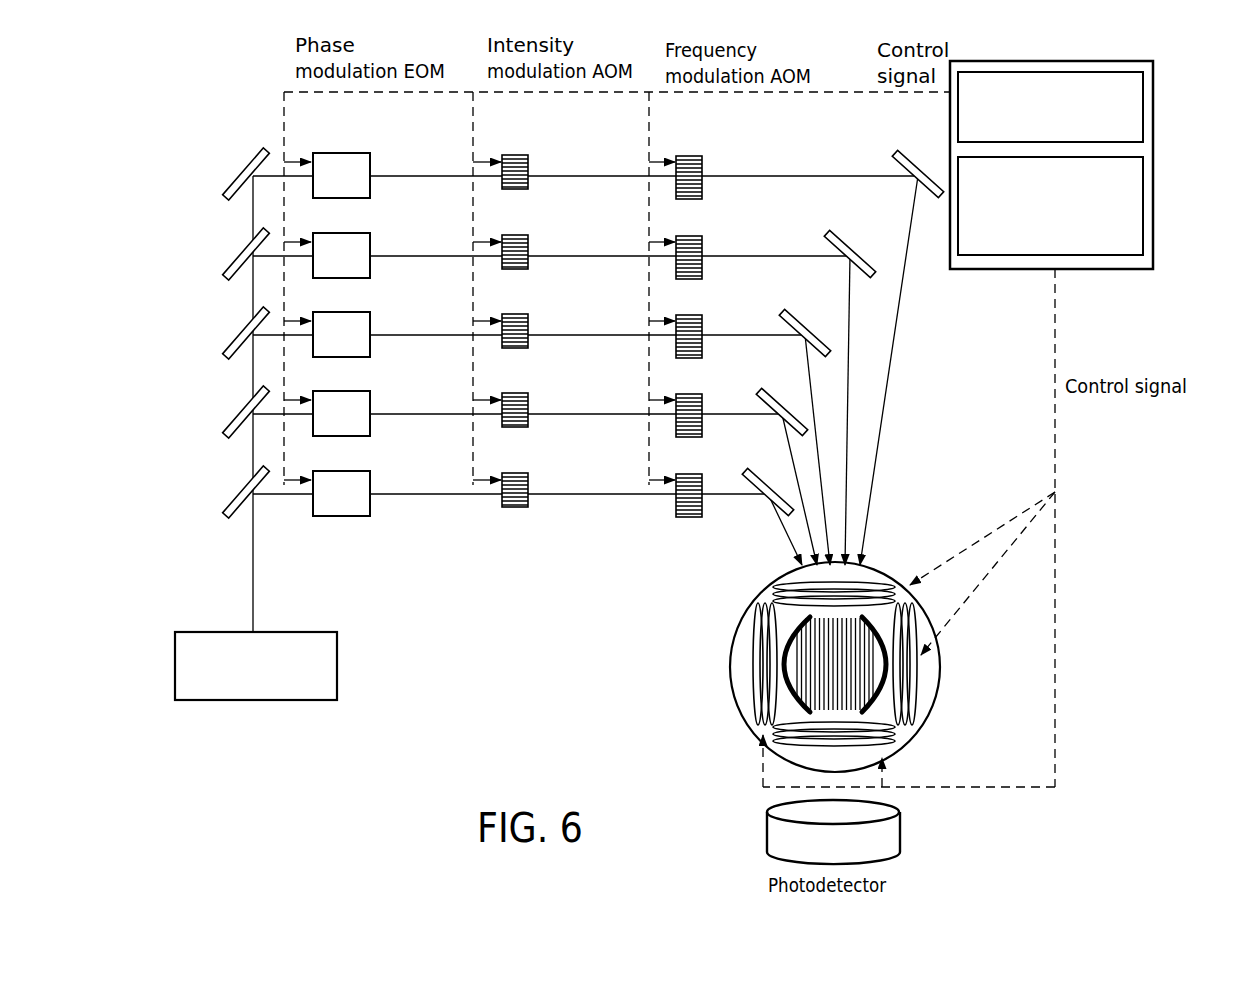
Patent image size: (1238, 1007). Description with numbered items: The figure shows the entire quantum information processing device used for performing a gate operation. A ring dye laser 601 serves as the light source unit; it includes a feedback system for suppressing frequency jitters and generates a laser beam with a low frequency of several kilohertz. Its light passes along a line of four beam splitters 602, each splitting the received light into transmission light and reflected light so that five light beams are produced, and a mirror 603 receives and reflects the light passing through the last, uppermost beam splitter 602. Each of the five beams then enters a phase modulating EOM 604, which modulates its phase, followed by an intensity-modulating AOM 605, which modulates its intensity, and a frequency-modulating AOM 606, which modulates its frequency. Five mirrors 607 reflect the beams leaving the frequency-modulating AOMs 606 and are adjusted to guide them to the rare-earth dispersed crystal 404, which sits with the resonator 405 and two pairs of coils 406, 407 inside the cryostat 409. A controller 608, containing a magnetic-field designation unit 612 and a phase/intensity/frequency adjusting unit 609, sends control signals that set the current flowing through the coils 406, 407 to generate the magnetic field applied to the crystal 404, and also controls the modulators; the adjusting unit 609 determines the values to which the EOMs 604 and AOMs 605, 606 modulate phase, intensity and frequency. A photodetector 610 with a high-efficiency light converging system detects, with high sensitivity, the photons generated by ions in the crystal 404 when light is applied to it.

The ring dye laser 601 is at (338, 663).
The beam splitter 602 is at (246, 254).
The mirror 603 is at (246, 176).
The phase modulating EO modulator 604 is at (352, 153).
The intensity-modulating AO modulator 605 is at (514, 155).
The frequency-modulating AO modulator 606 is at (692, 157).
The mirror 607 is at (897, 175).
The controller 608 is at (1132, 61).
The phase/intensity/frequency adjusting unit 609 is at (1144, 205).
The photodetector 610 is at (903, 832).
The magnetic-field designation unit 612 is at (1144, 100).
The rare-earth dispersed crystal 404 is at (800, 640).
The resonator 405 is at (805, 712).
The coil 406 is at (870, 589).
The coil 407 is at (755, 700).
The cryostat 409 is at (752, 600).